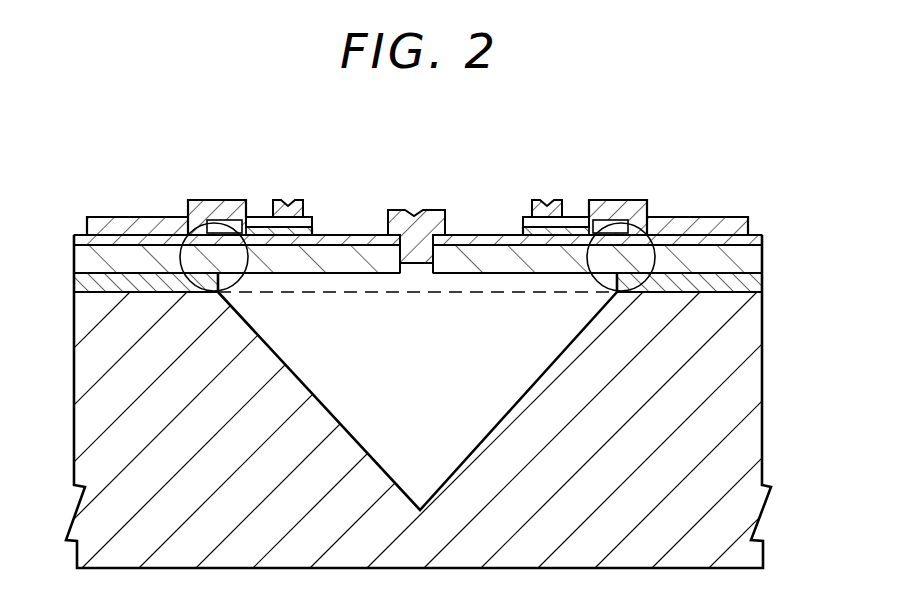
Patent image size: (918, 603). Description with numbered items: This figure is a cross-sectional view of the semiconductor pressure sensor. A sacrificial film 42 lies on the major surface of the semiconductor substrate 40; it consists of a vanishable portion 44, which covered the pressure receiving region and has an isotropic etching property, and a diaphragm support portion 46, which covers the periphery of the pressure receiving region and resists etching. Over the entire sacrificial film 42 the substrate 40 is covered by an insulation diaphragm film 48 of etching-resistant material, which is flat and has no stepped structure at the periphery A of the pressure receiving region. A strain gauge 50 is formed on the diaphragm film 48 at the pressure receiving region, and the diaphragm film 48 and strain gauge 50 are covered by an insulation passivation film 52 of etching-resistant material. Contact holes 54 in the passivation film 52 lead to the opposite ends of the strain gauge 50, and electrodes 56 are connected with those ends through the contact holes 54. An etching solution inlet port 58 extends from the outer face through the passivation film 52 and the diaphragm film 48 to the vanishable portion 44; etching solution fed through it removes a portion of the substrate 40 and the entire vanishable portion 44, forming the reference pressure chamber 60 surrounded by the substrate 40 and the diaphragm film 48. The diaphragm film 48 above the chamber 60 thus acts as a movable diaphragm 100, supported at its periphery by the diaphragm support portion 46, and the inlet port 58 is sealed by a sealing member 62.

The semiconductor substrate 40 is at (738, 378).
The sacrificial film 42 is at (746, 282).
The vanishable portion 44 is at (317, 280).
The diaphragm support portion 46 is at (124, 292).
The insulation diaphragm film 48 is at (737, 260).
The strain gauge 50 is at (259, 227).
The insulation passivation film 52 is at (480, 235).
The contact holes 54 is at (235, 203).
The electrodes 56 is at (117, 217).
The etching solution inlet port 58 is at (420, 275).
The reference pressure chamber 60 is at (387, 435).
The sealing member 62 is at (413, 212).
The movable diaphragm 100 is at (333, 245).
The periphery of the pressure receiving region A is at (211, 290).